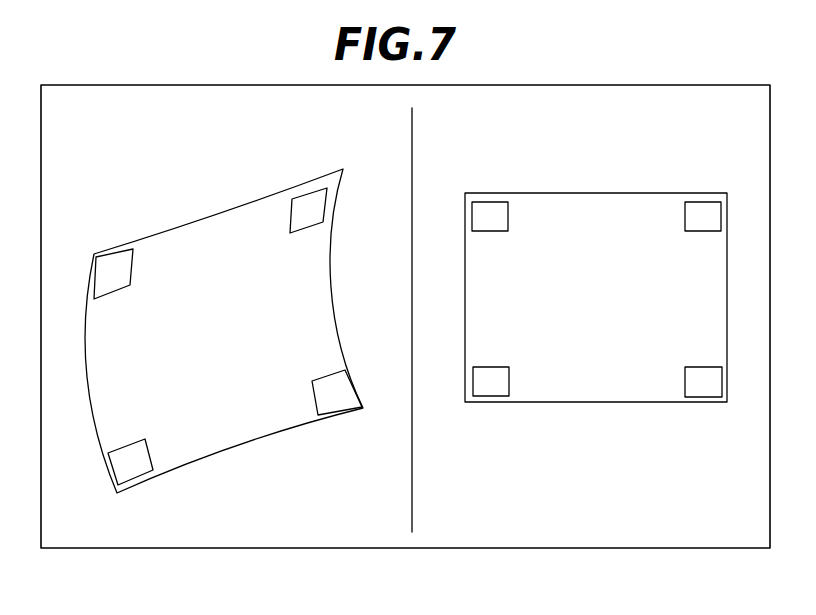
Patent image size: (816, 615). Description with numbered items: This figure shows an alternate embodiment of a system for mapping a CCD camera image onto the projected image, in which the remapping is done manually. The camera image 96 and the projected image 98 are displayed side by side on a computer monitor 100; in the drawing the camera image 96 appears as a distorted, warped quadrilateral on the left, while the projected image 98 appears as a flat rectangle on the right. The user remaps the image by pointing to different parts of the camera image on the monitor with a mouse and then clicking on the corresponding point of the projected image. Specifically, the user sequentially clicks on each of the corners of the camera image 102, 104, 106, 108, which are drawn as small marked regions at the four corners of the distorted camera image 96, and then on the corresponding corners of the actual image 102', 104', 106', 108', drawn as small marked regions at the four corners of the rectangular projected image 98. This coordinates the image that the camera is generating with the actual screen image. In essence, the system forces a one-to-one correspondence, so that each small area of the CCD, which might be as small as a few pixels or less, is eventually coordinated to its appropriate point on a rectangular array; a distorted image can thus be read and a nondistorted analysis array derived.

The camera image 96 is at (222, 452).
The projected image 98 is at (553, 402).
The computer monitor 100 is at (494, 548).
The corner of the camera image 102 is at (157, 229).
The corner of the camera image 104 is at (275, 173).
The corner of the camera image 106 is at (176, 487).
The corner of the camera image 108 is at (348, 415).
The corresponding corner of the actual image 102' is at (520, 180).
The corresponding corner of the actual image 104' is at (680, 180).
The corresponding corner of the actual image 106' is at (518, 432).
The corresponding corner of the actual image 108' is at (680, 432).